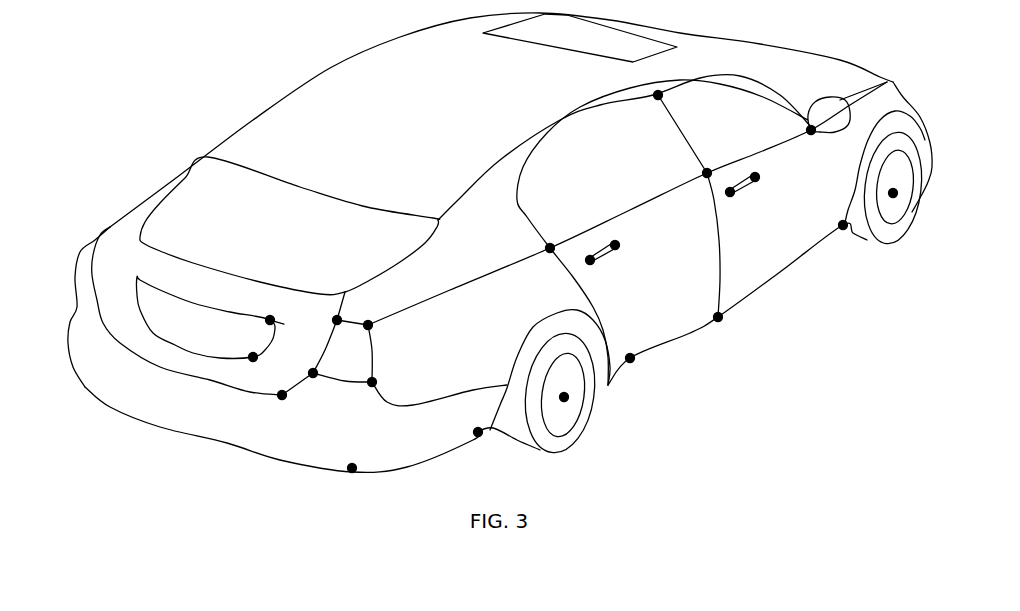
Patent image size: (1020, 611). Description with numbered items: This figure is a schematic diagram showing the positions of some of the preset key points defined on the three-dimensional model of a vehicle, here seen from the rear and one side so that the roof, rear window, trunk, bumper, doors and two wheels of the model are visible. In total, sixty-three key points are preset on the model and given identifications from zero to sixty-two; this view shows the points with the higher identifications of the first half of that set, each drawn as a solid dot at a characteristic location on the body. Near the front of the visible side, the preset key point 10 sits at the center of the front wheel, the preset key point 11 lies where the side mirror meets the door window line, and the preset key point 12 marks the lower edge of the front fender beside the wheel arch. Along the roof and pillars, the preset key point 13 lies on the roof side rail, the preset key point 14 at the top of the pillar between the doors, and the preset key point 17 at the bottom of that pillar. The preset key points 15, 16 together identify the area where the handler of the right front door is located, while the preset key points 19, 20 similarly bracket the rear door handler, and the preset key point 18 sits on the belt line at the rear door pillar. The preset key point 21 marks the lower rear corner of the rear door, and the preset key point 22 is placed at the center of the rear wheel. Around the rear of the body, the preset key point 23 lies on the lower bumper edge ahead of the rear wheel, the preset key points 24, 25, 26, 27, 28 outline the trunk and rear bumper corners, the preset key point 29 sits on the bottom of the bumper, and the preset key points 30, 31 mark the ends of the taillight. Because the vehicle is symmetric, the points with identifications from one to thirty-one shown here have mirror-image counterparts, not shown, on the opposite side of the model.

The preset key point 10 is at (889, 184).
The preset key point 11 is at (811, 140).
The preset key point 12 is at (839, 217).
The preset key point 13 is at (652, 104).
The preset key point 14 is at (708, 164).
The preset key point 15 is at (765, 177).
The preset key point 16 is at (734, 201).
The preset key point 17 is at (710, 310).
The preset key point 18 is at (552, 239).
The preset key point 19 is at (625, 243).
The preset key point 20 is at (594, 269).
The preset key point 21 is at (626, 349).
The preset key point 22 is at (561, 388).
The preset key point 23 is at (474, 423).
The preset key point 24 is at (361, 317).
The preset key point 25 is at (381, 373).
The preset key point 26 is at (325, 315).
The preset key point 27 is at (322, 366).
The preset key point 28 is at (278, 385).
The preset key point 29 is at (348, 458).
The preset key point 30 is at (265, 311).
The preset key point 31 is at (249, 349).